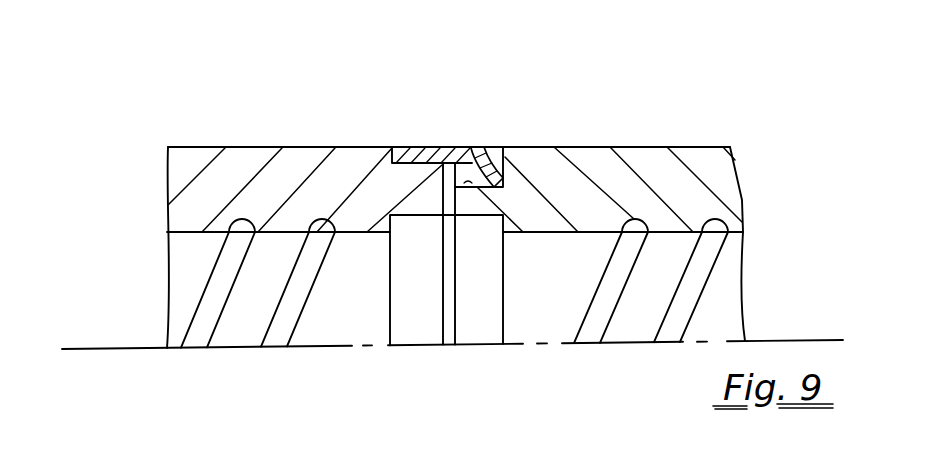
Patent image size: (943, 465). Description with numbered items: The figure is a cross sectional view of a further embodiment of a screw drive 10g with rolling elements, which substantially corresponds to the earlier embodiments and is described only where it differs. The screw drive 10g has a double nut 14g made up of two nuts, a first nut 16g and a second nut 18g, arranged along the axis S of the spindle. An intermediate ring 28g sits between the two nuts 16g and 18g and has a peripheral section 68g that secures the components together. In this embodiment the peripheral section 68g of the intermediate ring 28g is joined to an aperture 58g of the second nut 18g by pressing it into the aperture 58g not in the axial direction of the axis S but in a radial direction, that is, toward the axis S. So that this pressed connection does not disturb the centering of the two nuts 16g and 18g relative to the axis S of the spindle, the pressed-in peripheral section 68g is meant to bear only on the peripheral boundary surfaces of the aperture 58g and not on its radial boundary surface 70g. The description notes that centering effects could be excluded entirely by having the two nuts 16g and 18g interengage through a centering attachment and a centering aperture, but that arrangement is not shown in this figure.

The screw drive 10g is at (120, 96).
The double nut 14g is at (780, 88).
The first nut 16g is at (190, 162).
The second nut 18g is at (723, 178).
The intermediate ring 28g is at (422, 145).
The aperture 58g is at (503, 142).
The peripheral section 68g is at (487, 142).
The radial boundary surface 70g is at (474, 193).
The axis of the spindle S is at (803, 337).